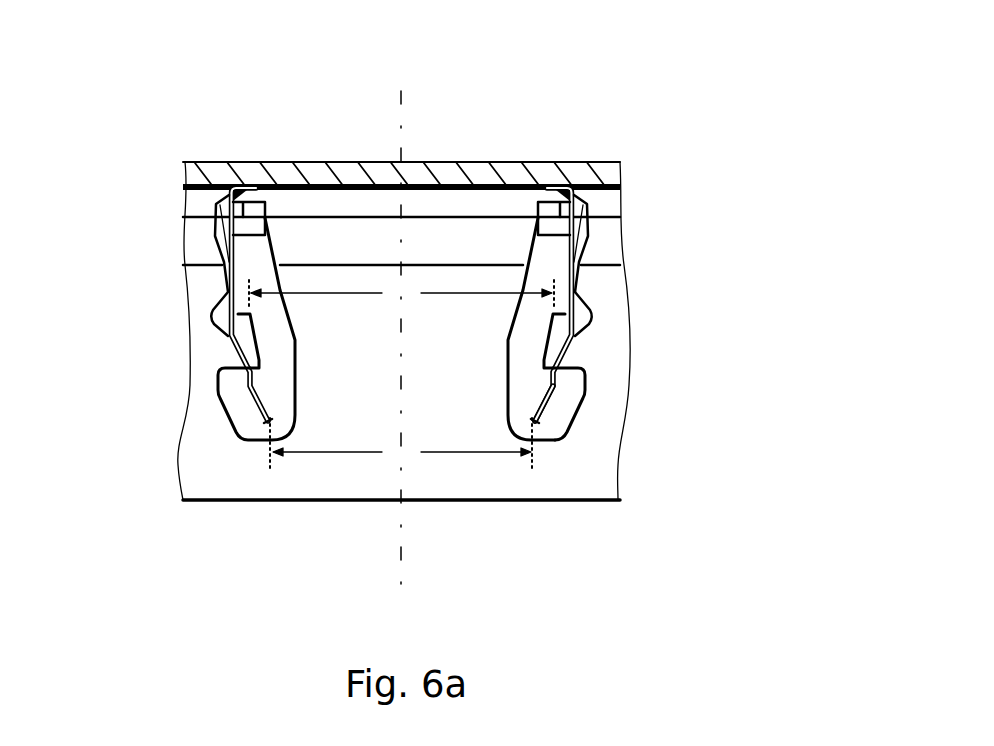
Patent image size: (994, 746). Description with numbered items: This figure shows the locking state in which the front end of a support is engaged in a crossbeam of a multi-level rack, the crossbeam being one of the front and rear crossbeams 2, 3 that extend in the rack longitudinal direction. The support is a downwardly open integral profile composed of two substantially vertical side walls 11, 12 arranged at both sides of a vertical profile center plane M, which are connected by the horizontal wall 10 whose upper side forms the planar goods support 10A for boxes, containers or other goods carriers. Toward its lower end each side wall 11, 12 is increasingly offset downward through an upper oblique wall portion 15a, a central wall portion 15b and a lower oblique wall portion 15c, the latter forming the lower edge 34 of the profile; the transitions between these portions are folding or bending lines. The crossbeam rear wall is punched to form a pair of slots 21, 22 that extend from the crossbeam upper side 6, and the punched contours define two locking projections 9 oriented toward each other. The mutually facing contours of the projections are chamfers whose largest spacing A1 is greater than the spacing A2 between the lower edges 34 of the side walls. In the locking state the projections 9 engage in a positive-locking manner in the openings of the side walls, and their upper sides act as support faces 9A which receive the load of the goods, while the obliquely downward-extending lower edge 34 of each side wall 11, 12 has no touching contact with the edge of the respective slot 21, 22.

The front crossbeam 2 is at (387, 393).
The rear crossbeam 3 is at (216, 506).
The crossbeam upper side 6 is at (213, 147).
The locking projection 9 is at (240, 343).
The support face 9A is at (590, 312).
The horizontal wall 10 is at (401, 126).
The goods support 10A is at (323, 146).
The side wall 11 is at (203, 279).
The side wall 12 is at (577, 276).
The upper oblique wall portion 15a is at (580, 355).
The central wall portion 15b is at (587, 394).
The lower oblique wall portion 15c is at (560, 398).
The slot 21 is at (285, 365).
The slot 22 is at (523, 383).
The lower edge 34 is at (243, 433).
The largest spacing A1 is at (401, 293).
The spacing A2 is at (401, 445).
The profile center plane M is at (403, 557).